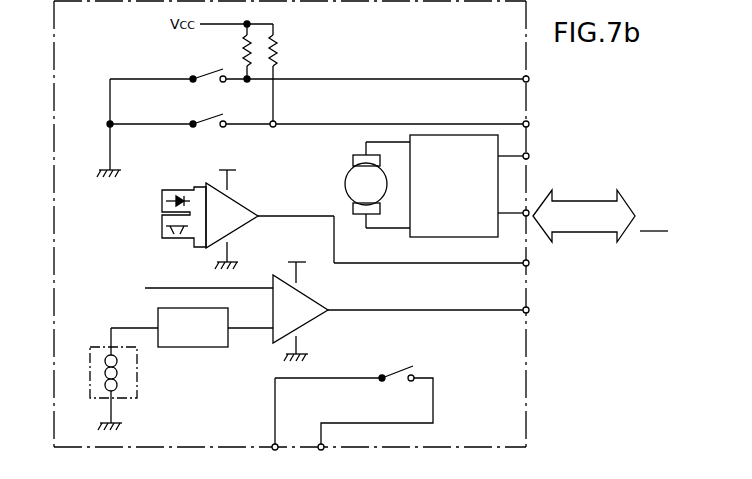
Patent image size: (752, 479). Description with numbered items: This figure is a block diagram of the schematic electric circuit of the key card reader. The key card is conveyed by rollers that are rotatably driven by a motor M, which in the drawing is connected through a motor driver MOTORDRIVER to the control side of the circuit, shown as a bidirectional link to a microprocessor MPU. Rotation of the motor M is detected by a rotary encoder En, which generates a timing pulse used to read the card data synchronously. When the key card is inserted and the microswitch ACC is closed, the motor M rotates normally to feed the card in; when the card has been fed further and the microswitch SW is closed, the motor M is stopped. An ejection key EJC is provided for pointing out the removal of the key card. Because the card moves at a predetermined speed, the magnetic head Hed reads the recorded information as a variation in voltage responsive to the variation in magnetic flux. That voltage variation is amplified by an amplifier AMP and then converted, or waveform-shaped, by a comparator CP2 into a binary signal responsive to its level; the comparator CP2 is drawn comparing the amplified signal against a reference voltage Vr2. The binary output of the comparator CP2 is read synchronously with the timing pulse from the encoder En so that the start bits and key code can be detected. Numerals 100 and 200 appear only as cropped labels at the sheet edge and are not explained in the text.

The camera body 100 is at (541, 478).
The lens unit 200 is at (626, 478).
The microswitch μSw SW is at (206, 71).
The ejection key EJC is at (206, 118).
The rotary encoder En is at (243, 206).
The motor M is at (377, 185).
The motor driver MOTORDRIVER is at (469, 186).
The comparator CP2 is at (316, 302).
The reference voltage Vr2 is at (203, 273).
The amplifier AMP is at (192, 327).
The magnetic head Hed is at (137, 378).
The microswitch μAcc ACC is at (396, 367).
The microprocessor unit MPU is at (602, 216).